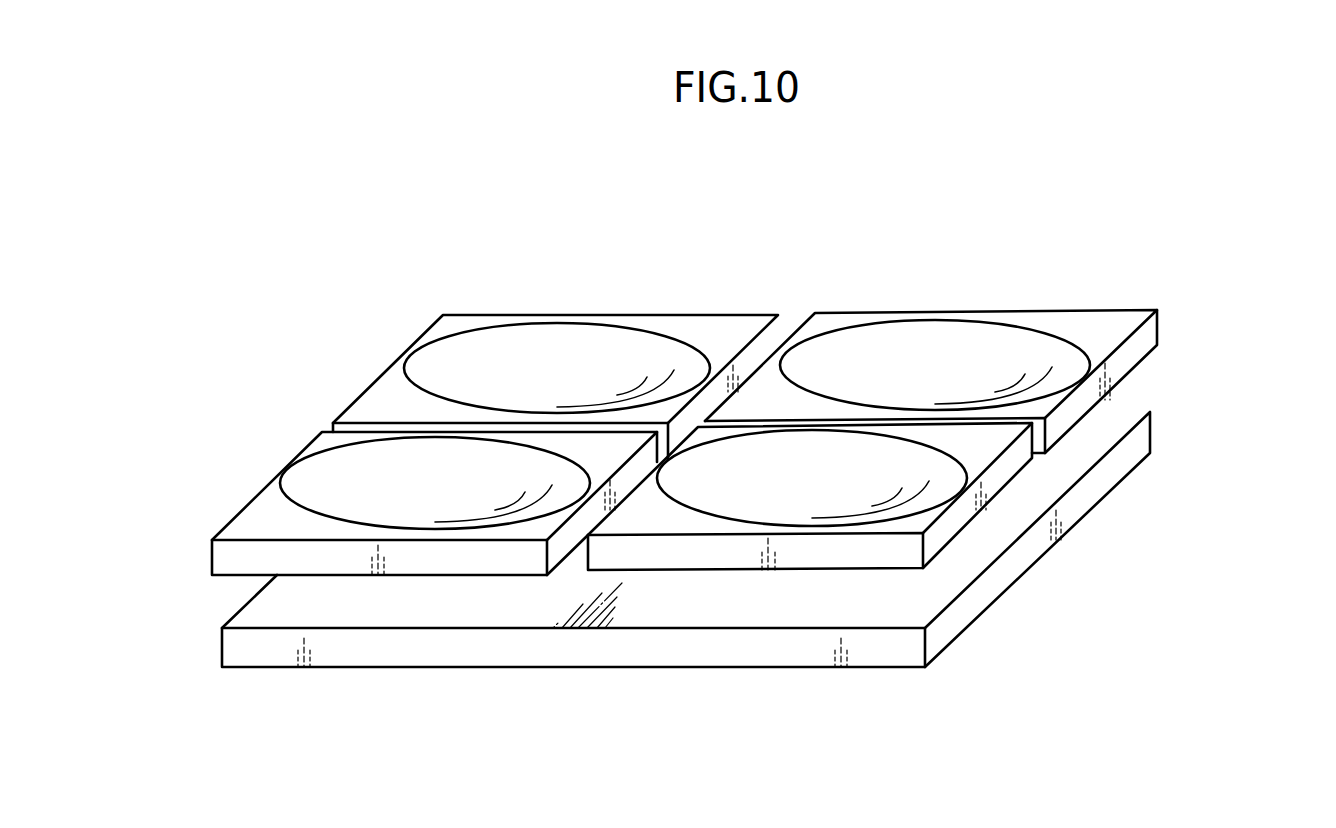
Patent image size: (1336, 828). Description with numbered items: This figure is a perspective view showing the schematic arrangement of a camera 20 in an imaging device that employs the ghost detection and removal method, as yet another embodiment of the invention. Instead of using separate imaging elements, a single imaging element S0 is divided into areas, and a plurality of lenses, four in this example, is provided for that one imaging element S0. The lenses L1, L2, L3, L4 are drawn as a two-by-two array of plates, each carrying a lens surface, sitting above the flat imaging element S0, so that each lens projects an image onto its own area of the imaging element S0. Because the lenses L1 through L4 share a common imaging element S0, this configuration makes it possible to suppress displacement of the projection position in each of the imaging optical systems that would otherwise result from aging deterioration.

The camera 20 is at (1102, 278).
The lens L1 is at (416, 371).
The lens L2 is at (1100, 363).
The lens L3 is at (290, 480).
The lens L4 is at (955, 487).
The imaging element S0 is at (952, 577).